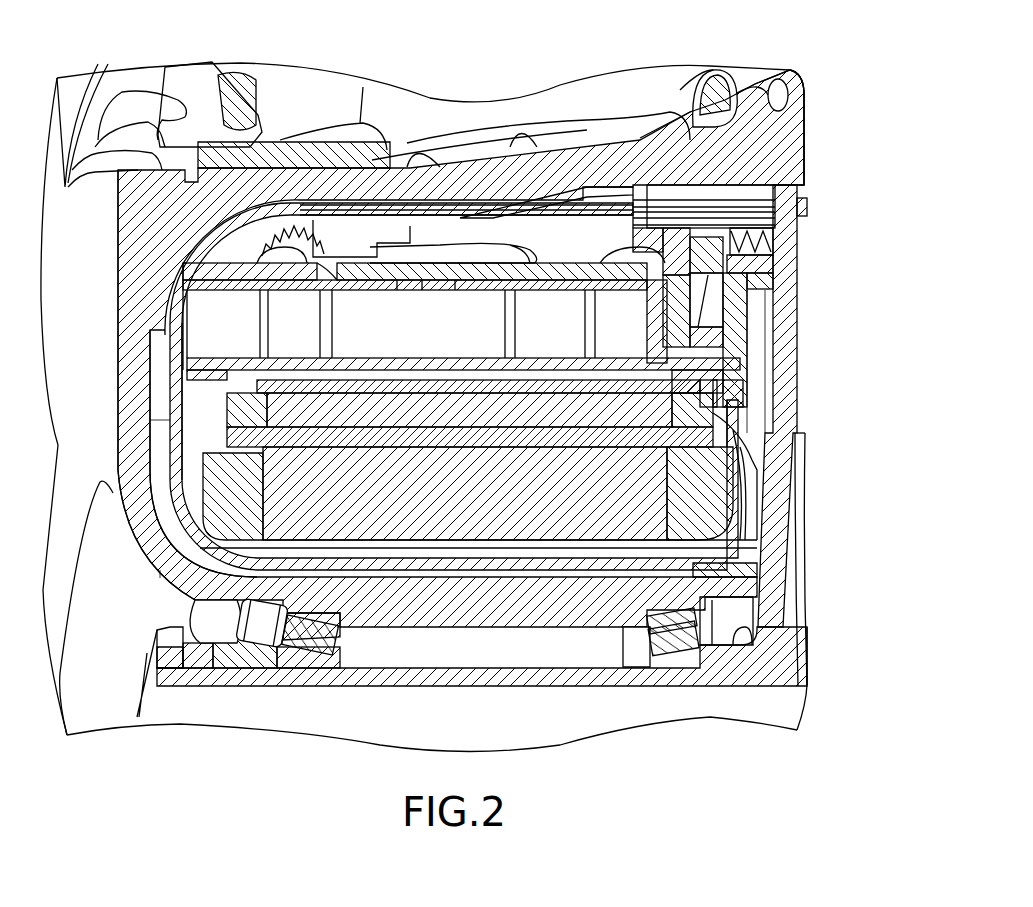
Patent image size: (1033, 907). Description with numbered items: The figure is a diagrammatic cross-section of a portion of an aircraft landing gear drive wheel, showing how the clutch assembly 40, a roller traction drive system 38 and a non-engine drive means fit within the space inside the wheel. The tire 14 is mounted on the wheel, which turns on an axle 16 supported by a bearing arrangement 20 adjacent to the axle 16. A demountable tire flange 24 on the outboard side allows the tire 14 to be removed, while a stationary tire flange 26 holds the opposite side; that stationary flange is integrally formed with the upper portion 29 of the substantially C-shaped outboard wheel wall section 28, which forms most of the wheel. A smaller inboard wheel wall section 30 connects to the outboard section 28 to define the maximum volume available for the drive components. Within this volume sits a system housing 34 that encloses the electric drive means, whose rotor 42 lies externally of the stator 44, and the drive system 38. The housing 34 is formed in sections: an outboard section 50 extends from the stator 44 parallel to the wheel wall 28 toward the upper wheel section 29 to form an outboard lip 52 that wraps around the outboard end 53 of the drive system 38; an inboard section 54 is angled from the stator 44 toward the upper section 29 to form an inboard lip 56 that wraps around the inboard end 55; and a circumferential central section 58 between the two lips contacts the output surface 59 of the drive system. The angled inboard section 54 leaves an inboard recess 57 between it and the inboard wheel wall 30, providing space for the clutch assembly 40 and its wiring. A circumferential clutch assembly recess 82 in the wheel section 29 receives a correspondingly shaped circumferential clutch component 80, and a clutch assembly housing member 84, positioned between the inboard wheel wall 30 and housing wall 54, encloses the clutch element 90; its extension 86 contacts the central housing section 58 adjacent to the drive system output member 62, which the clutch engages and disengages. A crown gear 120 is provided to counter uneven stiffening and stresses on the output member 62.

The tire 14 is at (278, 86).
The axle 16 is at (467, 729).
The bearing arrangement 20 is at (343, 628).
The demountable tire flange 24 is at (193, 75).
The stationary tire flange 26 is at (757, 80).
The outboard wheel wall section 28 is at (157, 200).
The upper portion of the outboard wheel wall section 29 is at (595, 165).
The inboard wheel wall section 30 is at (785, 380).
The system housing 34 is at (168, 415).
The drive system 38 is at (185, 264).
The clutch assembly 40 is at (753, 172).
The rotor 42 is at (447, 420).
The stator 44 is at (452, 504).
The outboard section 50 is at (177, 367).
The outboard lip 52 is at (242, 308).
The outboard end of the drive system 53 is at (186, 328).
The inboard section 54 is at (730, 423).
The inboard end of the drive system 55 is at (647, 313).
The inboard lip 56 is at (573, 281).
The inboard recess 57 is at (760, 322).
The central system housing section 58 is at (397, 281).
The output surface 59 is at (455, 281).
The output member 62 is at (422, 281).
The circumferential clutch component 80 is at (715, 270).
The circumferential clutch assembly recess 82 is at (723, 224).
The clutch assembly housing member 84 is at (755, 270).
The extension 86 is at (432, 235).
The clutch element 90 is at (788, 246).
The crown gear 120 is at (300, 233).